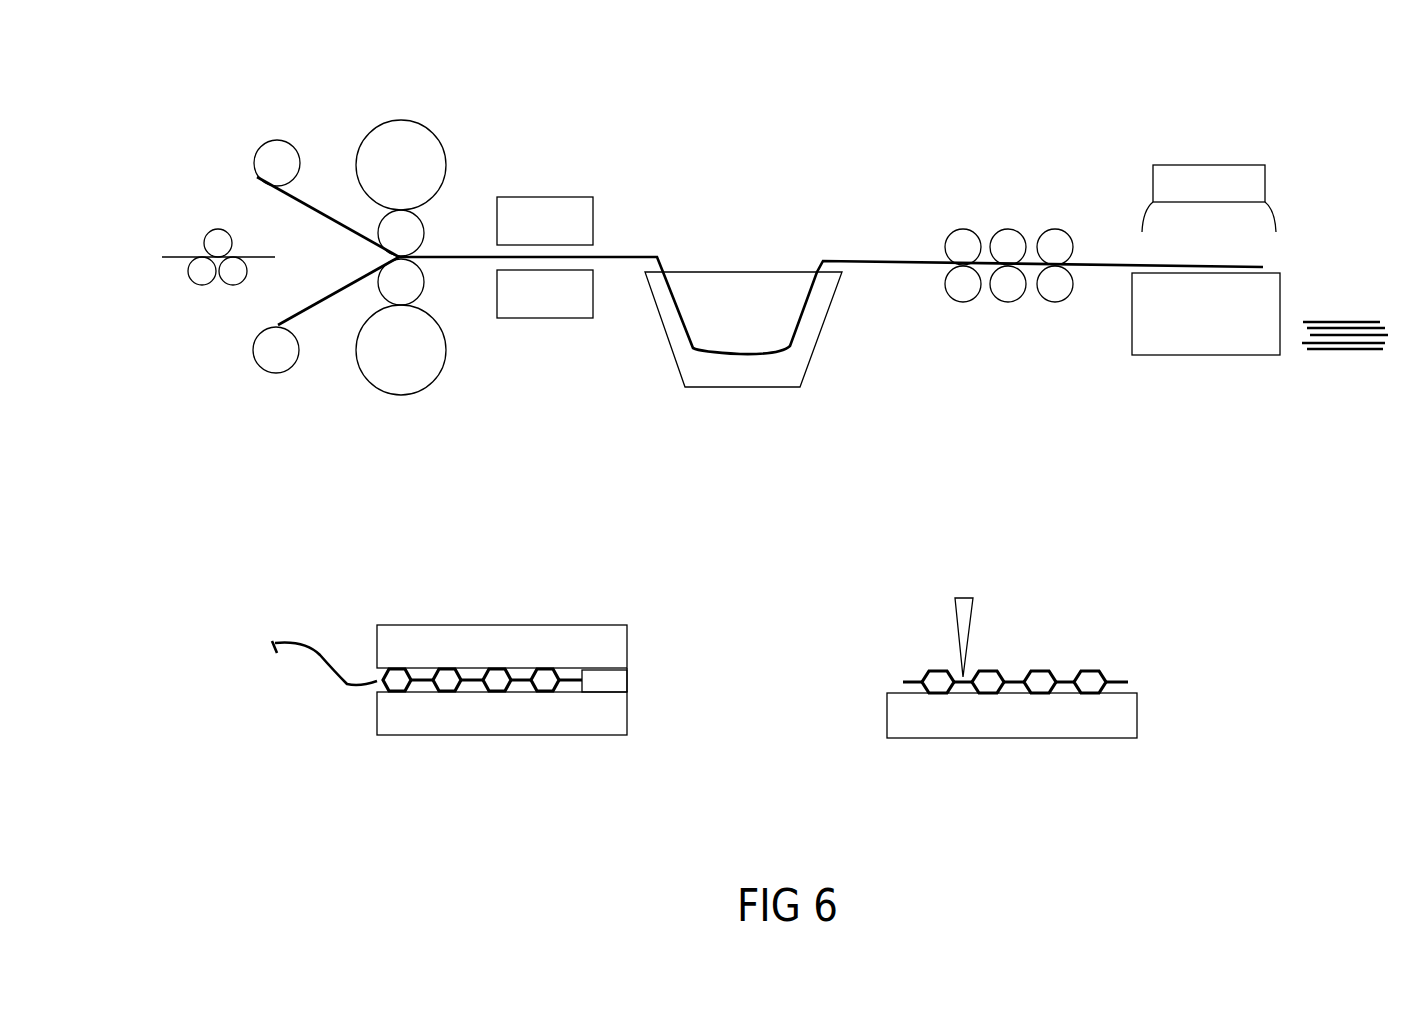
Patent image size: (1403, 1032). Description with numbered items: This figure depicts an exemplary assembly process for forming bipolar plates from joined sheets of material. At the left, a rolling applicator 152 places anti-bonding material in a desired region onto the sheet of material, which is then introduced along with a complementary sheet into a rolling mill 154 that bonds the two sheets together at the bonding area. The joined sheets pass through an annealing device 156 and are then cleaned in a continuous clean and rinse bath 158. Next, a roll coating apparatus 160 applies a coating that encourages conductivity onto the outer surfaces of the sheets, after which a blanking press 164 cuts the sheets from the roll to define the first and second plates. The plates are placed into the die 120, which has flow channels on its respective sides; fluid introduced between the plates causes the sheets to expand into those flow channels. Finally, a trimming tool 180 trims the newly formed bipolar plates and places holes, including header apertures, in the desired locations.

The rolling applicator 152 is at (194, 214).
The rolling mill 154 is at (336, 118).
The annealing device 156 is at (536, 159).
The continuous clean and rinse bath 158 is at (739, 248).
The roll coating apparatus 160 is at (1001, 186).
The blanking press 164 is at (1207, 141).
The die 120 is at (496, 588).
The trimming tool 180 is at (960, 618).